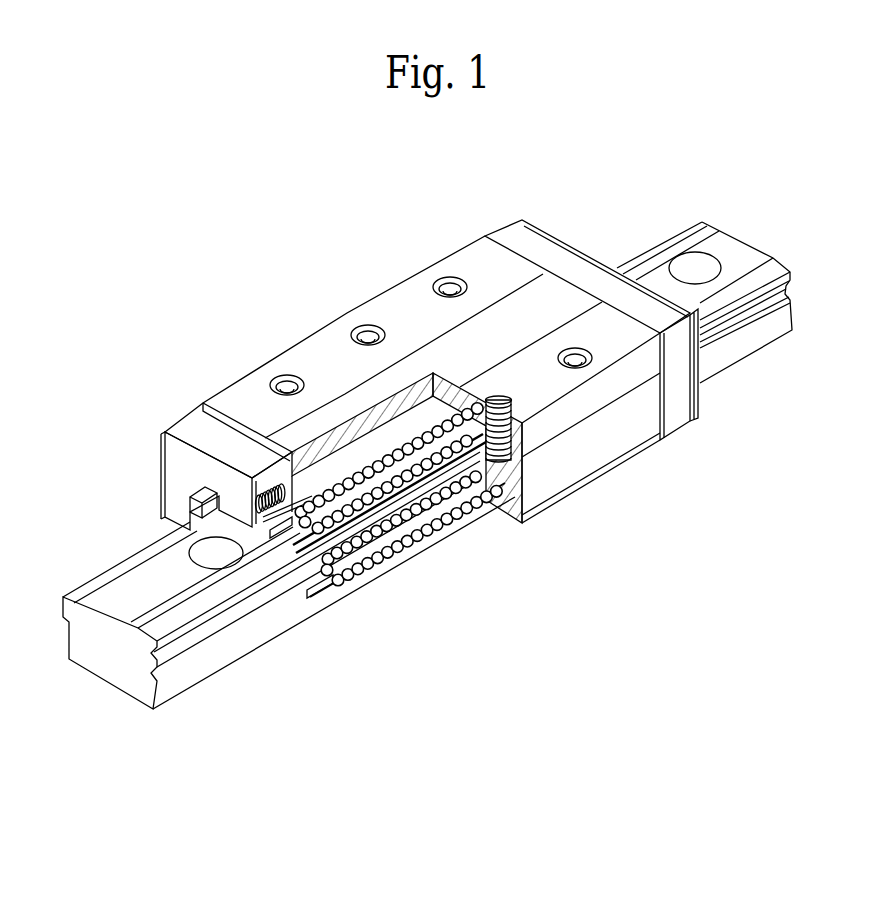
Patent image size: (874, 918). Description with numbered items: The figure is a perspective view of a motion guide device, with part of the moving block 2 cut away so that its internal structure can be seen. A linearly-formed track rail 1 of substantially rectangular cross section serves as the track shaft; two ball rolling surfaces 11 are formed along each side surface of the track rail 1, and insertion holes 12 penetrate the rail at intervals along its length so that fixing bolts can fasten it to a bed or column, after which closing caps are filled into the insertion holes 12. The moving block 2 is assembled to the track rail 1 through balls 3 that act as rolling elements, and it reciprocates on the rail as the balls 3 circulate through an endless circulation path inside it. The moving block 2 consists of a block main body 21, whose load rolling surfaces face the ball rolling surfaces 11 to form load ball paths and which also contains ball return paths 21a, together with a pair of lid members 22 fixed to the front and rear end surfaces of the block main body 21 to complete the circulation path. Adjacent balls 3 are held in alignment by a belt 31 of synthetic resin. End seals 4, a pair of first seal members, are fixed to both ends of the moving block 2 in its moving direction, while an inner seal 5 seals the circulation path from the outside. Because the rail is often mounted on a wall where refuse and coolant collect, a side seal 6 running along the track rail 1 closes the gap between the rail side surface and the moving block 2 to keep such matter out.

The track rail 1 is at (447, 433).
The ball rolling surfaces 11 is at (735, 286).
The insertion holes 12 is at (705, 262).
The moving block 2 is at (424, 409).
The block main body 21 is at (415, 300).
The ball return paths 21a is at (520, 522).
The lid members 22 is at (513, 243).
The balls 3 is at (387, 573).
The belt 31 is at (453, 537).
The end seals 4 is at (162, 455).
The inner seal 5 is at (278, 522).
The side seal 6 is at (323, 595).